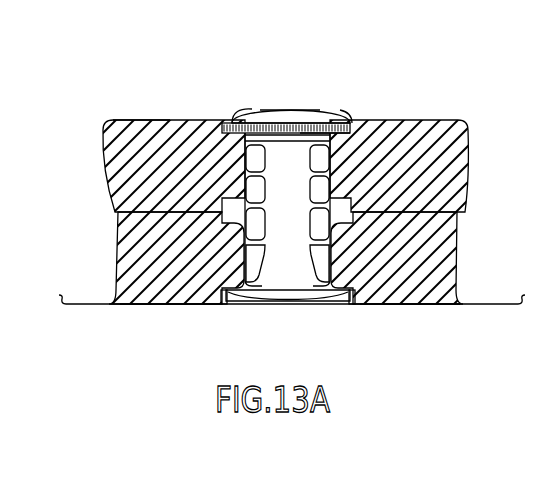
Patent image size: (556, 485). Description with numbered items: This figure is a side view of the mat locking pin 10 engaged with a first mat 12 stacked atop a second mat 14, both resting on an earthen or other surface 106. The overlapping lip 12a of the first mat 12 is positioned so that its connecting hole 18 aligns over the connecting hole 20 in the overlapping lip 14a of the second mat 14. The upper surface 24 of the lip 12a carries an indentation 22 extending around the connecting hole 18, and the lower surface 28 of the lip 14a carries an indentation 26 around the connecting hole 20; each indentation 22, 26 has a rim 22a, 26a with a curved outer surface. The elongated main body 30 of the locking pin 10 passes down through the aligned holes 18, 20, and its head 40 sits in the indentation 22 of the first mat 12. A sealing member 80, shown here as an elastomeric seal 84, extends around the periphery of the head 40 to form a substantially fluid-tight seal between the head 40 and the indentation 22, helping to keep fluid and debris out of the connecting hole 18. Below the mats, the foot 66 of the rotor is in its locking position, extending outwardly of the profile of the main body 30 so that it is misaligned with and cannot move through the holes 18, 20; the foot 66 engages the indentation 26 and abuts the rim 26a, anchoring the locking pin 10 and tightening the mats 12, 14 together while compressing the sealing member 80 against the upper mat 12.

The mat locking pin 10 is at (347, 40).
The first mat 12 is at (190, 116).
The lip of the first mat 12a is at (143, 118).
The second mat 14 is at (457, 268).
The lip of the second mat 14a is at (404, 306).
The connecting hole 18 is at (276, 108).
The connecting hole 20 is at (330, 260).
The indentation 22 is at (237, 112).
The rim 22a is at (353, 120).
The upper surface 24 is at (425, 120).
The indentation 26 is at (342, 302).
The rim 26a is at (224, 304).
The lower surface 28 is at (178, 305).
The main body 30 is at (303, 204).
The head 40 is at (256, 108).
The foot 66 is at (298, 303).
The sealing member 80 is at (299, 124).
The elastomeric seal 84 is at (325, 123).
The earthen or other surface 106 is at (486, 303).